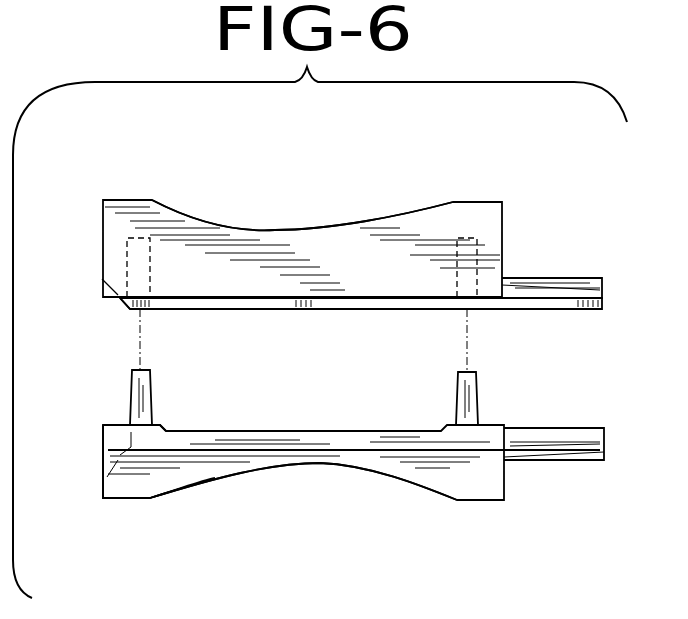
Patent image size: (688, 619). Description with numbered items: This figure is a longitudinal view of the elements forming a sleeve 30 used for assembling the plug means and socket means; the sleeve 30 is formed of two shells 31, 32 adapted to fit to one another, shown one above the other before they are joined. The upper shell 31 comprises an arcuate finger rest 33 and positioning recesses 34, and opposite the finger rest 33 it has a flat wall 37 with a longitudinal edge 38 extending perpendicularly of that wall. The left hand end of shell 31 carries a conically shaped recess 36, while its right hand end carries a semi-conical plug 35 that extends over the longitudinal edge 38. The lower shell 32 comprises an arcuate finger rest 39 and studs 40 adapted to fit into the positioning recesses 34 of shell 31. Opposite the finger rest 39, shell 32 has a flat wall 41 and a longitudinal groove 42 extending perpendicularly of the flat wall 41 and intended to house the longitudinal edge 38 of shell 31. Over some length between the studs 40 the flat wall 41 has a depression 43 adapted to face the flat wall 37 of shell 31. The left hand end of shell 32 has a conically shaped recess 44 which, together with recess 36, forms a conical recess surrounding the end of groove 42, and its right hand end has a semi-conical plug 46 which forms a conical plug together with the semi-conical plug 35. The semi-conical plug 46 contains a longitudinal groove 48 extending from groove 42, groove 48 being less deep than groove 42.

The sleeve 30 is at (272, 503).
The shell 31 is at (130, 200).
The shell 32 is at (135, 500).
The arcuate finger rest 33 is at (279, 223).
The positioning recesses 34 is at (127, 248).
The semi-conical plug 35 is at (520, 283).
The conically shaped recess 36 is at (117, 297).
The flat wall 37 is at (367, 303).
The longitudinal edge 38 is at (222, 300).
The arcuate finger rest 39 is at (338, 478).
The studs 40 is at (147, 395).
The flat wall 41 is at (115, 420).
The longitudinal groove 42 is at (180, 443).
The depression 43 is at (308, 420).
The conically shaped recess 44 is at (115, 452).
The semi-conical plug 46 is at (545, 462).
The longitudinal groove 48 is at (545, 433).